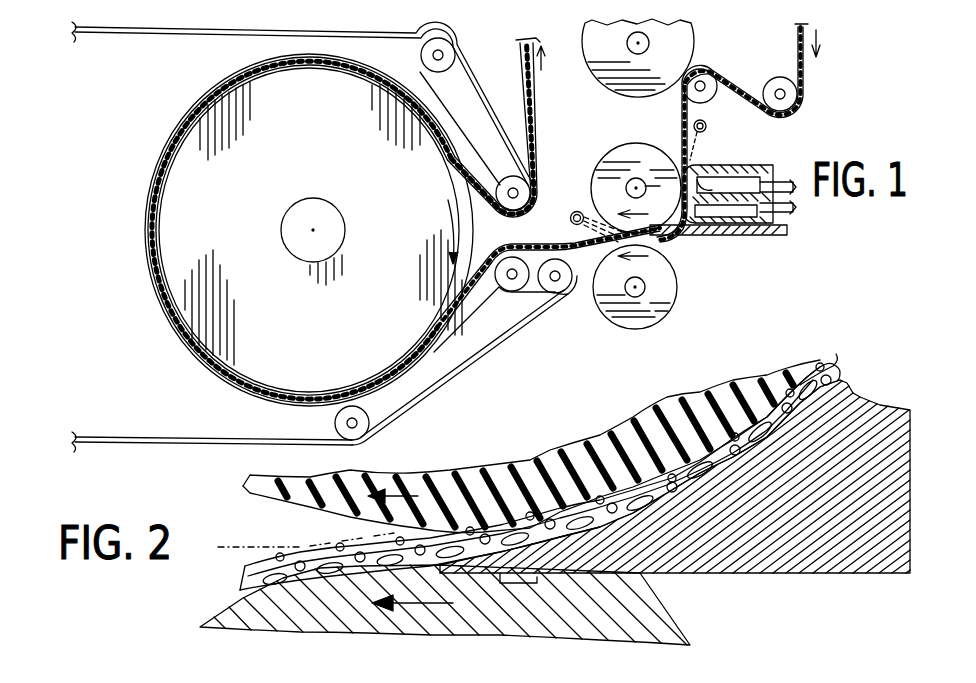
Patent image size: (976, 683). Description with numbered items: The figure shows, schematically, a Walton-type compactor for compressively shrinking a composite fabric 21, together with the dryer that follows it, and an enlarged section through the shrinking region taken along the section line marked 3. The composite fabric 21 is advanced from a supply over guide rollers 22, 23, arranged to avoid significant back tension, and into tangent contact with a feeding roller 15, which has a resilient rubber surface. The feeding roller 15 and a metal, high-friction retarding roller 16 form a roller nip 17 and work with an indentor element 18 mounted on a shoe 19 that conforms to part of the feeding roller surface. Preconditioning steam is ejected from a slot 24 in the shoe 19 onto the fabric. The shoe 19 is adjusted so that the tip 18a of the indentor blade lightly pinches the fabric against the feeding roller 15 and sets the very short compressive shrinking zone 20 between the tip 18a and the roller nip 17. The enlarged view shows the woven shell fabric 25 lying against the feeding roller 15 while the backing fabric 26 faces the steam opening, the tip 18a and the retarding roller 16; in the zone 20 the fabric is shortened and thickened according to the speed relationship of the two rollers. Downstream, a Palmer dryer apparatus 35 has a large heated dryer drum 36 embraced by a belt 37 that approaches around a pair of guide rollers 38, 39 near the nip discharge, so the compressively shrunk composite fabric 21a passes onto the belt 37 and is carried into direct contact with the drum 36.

In FIG. 1, the dryer apparatus 35 is at (277, 166).
In FIG. 1, the dryer drum 36 is at (175, 176).
In FIG. 1, the compressively shrunk composite fabric 21a is at (556, 240).
In FIG. 1, the feeding roller 15 is at (612, 170).
In FIG. 2, the feeding roller 15 is at (250, 485).
In FIG. 1, the retarding roller 16 is at (610, 306).
In FIG. 2, the retarding roller 16 is at (355, 626).
In FIG. 1, the roller nip 17 is at (655, 240).
In FIG. 2, the roller nip 17 is at (420, 590).
In FIG. 1, the indentor element 18 is at (752, 236).
In FIG. 2, the indentor element 18 is at (838, 556).
In FIG. 1, the shoe 19 is at (757, 168).
In FIG. 1, the slot 24 is at (700, 182).
In FIG. 1, the guide roller 22 is at (790, 96).
In FIG. 1, the guide roller 23 is at (708, 98).
In FIG. 1, the composite fabric 21 is at (796, 43).
In FIG. 2, the composite fabric 21 is at (850, 376).
In FIG. 1, the guide roller 39 is at (508, 292).
In FIG. 1, the guide roller 38 is at (554, 294).
In FIG. 1, the belt 37 is at (458, 366).
In FIG. 2, the shell fabric 25 is at (305, 554).
In FIG. 2, the backing fabric 26 is at (292, 588).
In FIG. 2, the compressive shrinking zone 20 is at (457, 562).
In FIG. 2, the tip 18a is at (537, 580).
In FIG. 2, the section line 3- 3 is at (300, 547).